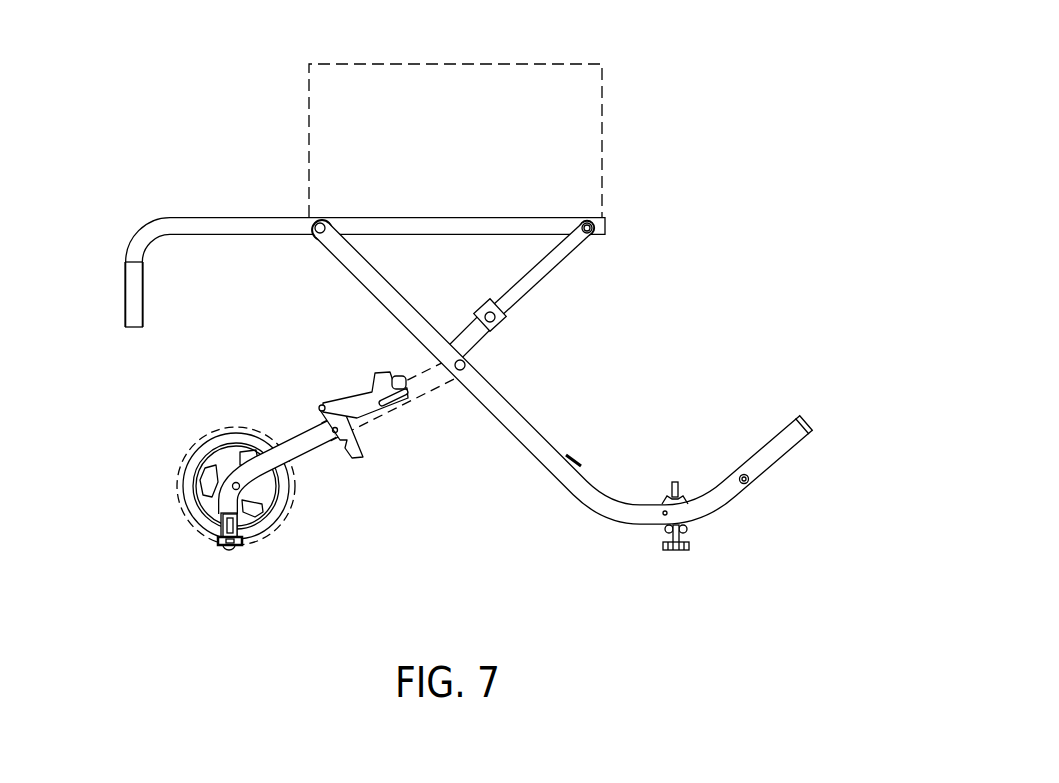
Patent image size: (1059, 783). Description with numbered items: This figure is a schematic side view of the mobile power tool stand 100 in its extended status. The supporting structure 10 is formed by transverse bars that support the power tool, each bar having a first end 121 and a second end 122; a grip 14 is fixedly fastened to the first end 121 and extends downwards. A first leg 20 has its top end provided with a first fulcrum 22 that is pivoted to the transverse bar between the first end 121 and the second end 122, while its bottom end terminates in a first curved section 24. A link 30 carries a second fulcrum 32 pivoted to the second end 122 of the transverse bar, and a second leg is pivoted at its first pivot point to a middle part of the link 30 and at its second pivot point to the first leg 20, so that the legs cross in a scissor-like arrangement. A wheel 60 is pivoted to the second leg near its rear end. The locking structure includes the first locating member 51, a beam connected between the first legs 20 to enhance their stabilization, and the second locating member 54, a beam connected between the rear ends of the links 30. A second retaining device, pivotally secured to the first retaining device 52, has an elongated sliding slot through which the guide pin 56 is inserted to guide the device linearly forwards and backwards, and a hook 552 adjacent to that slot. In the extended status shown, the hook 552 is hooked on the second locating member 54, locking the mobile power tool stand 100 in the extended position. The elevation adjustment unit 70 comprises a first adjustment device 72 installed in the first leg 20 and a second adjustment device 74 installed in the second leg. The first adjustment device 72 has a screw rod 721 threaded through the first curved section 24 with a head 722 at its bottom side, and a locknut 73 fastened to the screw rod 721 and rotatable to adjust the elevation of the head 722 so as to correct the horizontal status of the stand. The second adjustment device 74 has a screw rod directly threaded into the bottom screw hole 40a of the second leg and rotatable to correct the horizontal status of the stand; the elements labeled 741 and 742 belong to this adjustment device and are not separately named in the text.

The mobile power tool stand 100 is at (203, 81).
The supporting structure 10 is at (426, 205).
The first end 121 is at (172, 215).
The grip 14 is at (125, 293).
The first fulcrum 22 is at (321, 223).
The second end 122 is at (607, 228).
The second fulcrum 32 is at (587, 228).
The link 30 is at (572, 267).
The second locating member 54 is at (405, 376).
The hook 552 is at (393, 374).
The guide pin 56 is at (364, 382).
The wheel 60 is at (155, 465).
The bottom screw hole 40a is at (227, 532).
The brake housing 741 is at (154, 562).
The second adjustment device 74 is at (210, 565).
The brake pad 742 is at (234, 550).
The first retaining device 52 is at (350, 470).
The first locating member 51 is at (573, 455).
The first leg 20 is at (792, 470).
The first curved section 24 is at (637, 505).
The screw rod 721 is at (680, 483).
The locknut 73 is at (664, 529).
The head 722 is at (677, 551).
The first adjustment device 72 is at (705, 550).
The elevation adjustment unit 70 is at (686, 531).